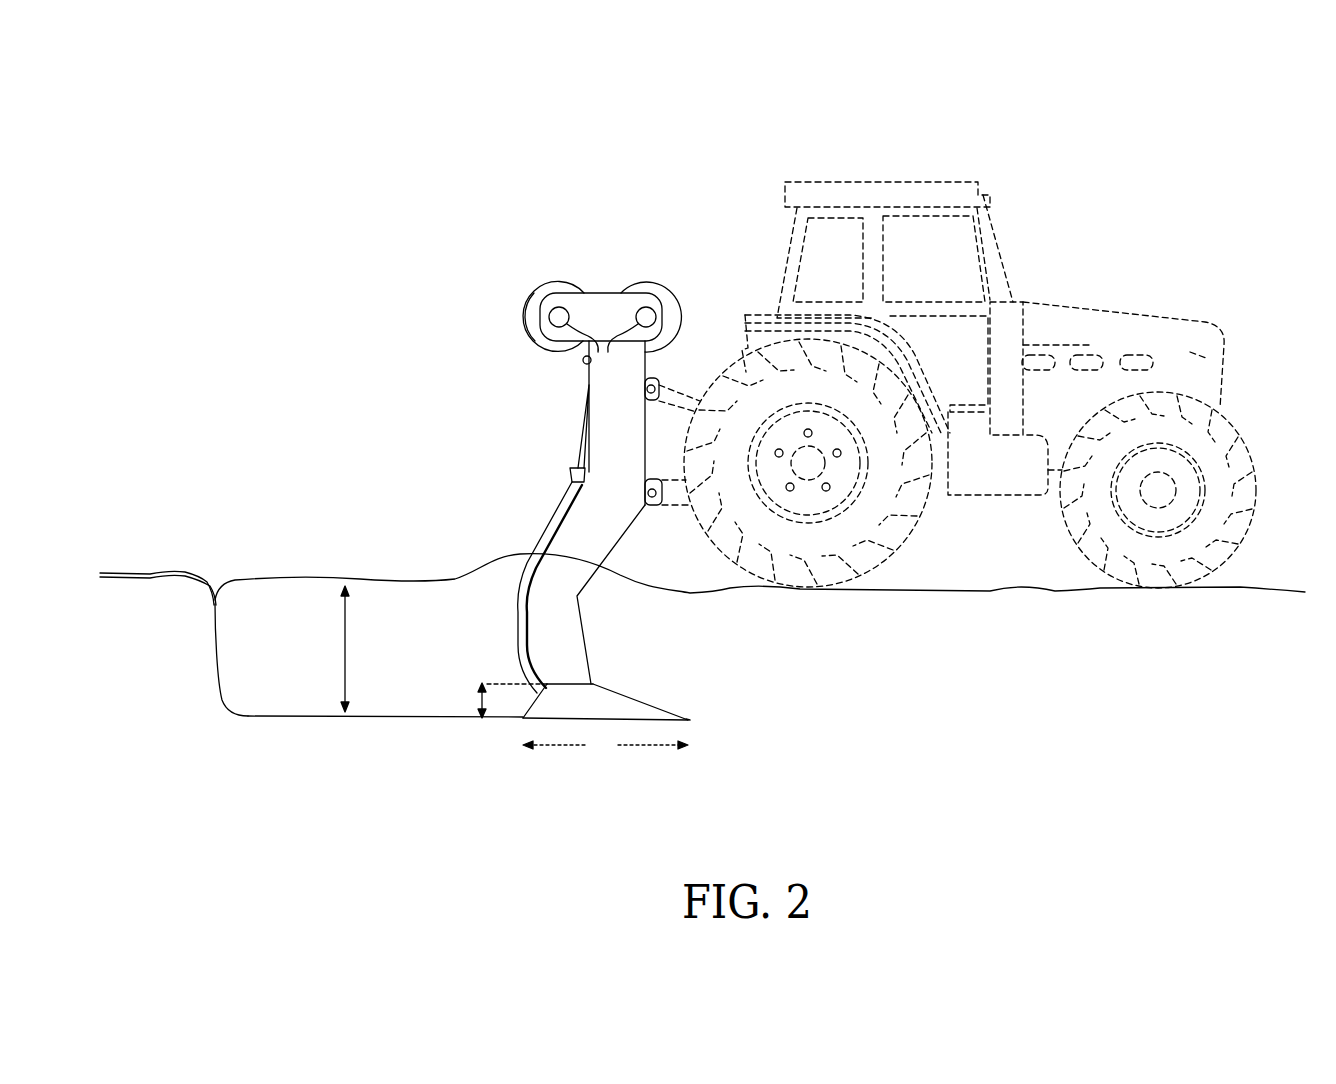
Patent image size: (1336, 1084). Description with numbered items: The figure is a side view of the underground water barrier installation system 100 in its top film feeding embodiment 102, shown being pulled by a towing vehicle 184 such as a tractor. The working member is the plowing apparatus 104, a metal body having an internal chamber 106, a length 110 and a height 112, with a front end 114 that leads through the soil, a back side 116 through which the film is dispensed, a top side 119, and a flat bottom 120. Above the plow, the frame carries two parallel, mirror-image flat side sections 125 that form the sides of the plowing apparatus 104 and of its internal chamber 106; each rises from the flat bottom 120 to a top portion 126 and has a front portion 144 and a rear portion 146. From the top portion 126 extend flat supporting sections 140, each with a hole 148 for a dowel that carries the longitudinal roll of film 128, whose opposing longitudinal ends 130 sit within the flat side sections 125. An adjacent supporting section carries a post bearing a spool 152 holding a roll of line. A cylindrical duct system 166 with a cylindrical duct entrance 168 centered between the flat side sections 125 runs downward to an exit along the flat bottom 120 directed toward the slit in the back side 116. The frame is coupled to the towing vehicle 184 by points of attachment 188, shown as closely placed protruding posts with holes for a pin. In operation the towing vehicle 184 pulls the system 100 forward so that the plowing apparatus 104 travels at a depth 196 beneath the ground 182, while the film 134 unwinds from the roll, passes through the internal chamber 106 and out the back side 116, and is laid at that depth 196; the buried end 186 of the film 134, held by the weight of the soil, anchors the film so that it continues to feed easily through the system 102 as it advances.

The underground water barrier installation system 100 is at (428, 108).
The top film feeding embodiment 102 is at (478, 235).
The plowing apparatus 104 is at (616, 701).
The internal chamber 106 is at (600, 700).
The length 110 is at (650, 752).
The height 112 is at (478, 695).
The front end 114 is at (690, 720).
The back side 116 is at (535, 688).
The top side 119 is at (664, 712).
The flat bottom 120 is at (524, 722).
The flat side sections 125 is at (542, 517).
The top portion 126 is at (602, 292).
The longitudinal roll of film 128 is at (526, 318).
The opposing longitudinal ends 130 is at (545, 344).
The film 134 is at (296, 719).
The flat supporting sections 140 is at (556, 292).
The front portion 144 is at (580, 632).
The rear portion 146 is at (585, 395).
The hole 148 is at (604, 354).
The spool 152 is at (684, 315).
The cylindrical duct system 166 is at (518, 600).
The cylindrical duct entrance 168 is at (569, 472).
The ground 182 is at (150, 576).
The towing vehicle 184 is at (937, 190).
The end of the film 186 is at (232, 708).
The points of attachment 188 is at (660, 386).
The depth 196 is at (340, 620).